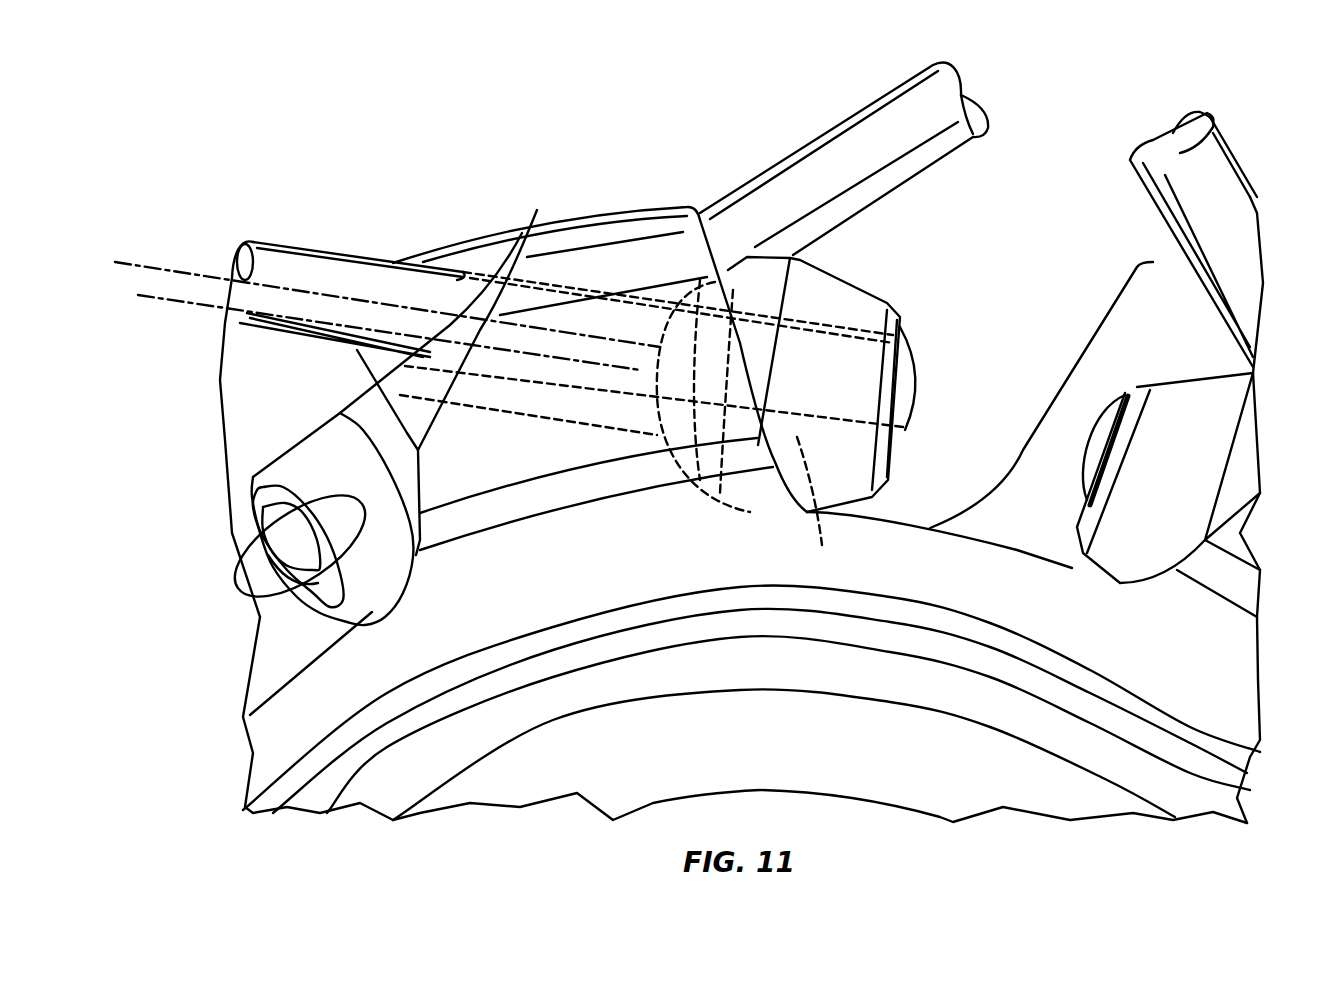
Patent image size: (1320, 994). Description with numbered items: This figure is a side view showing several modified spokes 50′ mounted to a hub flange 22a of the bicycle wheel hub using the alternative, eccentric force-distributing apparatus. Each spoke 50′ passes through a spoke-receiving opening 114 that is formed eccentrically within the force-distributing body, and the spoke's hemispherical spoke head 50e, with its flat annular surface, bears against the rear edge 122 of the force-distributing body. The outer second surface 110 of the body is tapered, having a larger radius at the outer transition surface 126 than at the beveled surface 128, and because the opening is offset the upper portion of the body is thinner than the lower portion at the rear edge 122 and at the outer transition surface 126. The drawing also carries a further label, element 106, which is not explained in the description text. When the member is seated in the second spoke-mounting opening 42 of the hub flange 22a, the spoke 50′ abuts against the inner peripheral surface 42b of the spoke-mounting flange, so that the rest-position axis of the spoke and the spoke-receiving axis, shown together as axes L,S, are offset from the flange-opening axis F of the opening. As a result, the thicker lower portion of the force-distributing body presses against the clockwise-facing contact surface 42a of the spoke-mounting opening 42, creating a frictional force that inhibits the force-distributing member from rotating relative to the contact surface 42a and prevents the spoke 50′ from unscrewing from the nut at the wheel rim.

The hub flange 22a is at (540, 223).
The second spoke-mounting opening 42 is at (455, 278).
The contact surface 42a is at (720, 480).
The inner peripheral surface 42b is at (563, 285).
The modified spoke 50′ is at (292, 263).
The modified spoke head 50e is at (273, 563).
The flange 106 is at (723, 262).
The second surface 110 is at (303, 440).
The spoke-receiving opening 114 is at (821, 506).
The rear edge 122 is at (322, 588).
The outer transition surface 126 is at (367, 413).
The beveled surface 128 is at (285, 495).
The rest-position axis and spoke-receiving axis L,S is at (185, 278).
The flange-opening axis F is at (170, 297).